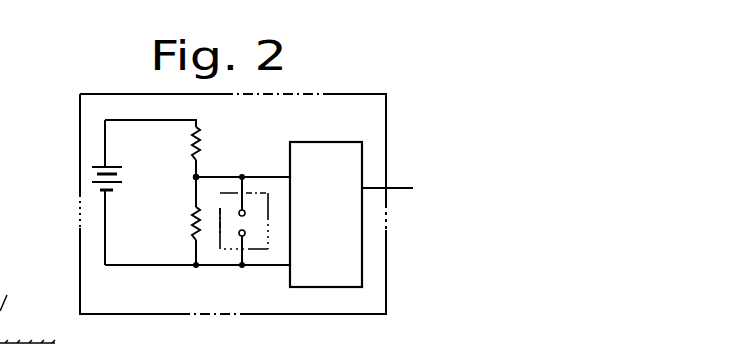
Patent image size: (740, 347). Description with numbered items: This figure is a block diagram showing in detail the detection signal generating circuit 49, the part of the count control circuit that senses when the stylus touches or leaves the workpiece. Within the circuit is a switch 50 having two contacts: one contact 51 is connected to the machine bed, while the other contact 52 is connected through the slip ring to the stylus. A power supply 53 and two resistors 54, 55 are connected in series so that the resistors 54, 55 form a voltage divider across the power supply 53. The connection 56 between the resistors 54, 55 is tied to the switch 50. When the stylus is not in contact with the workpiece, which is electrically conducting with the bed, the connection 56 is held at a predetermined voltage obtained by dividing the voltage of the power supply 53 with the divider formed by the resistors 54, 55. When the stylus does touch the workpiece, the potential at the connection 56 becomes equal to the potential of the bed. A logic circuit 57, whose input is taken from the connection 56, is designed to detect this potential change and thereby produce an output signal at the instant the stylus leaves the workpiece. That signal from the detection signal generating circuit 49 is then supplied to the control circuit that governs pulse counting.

The detection signal generating circuit 49 is at (387, 122).
The switch 50 is at (250, 250).
The contact 51 is at (240, 236).
The contact 52 is at (240, 210).
The power supply 53 is at (93, 173).
The resistor 54 is at (192, 150).
The resistor 55 is at (192, 231).
The connection 56 is at (194, 178).
The logic circuit 57 is at (335, 230).